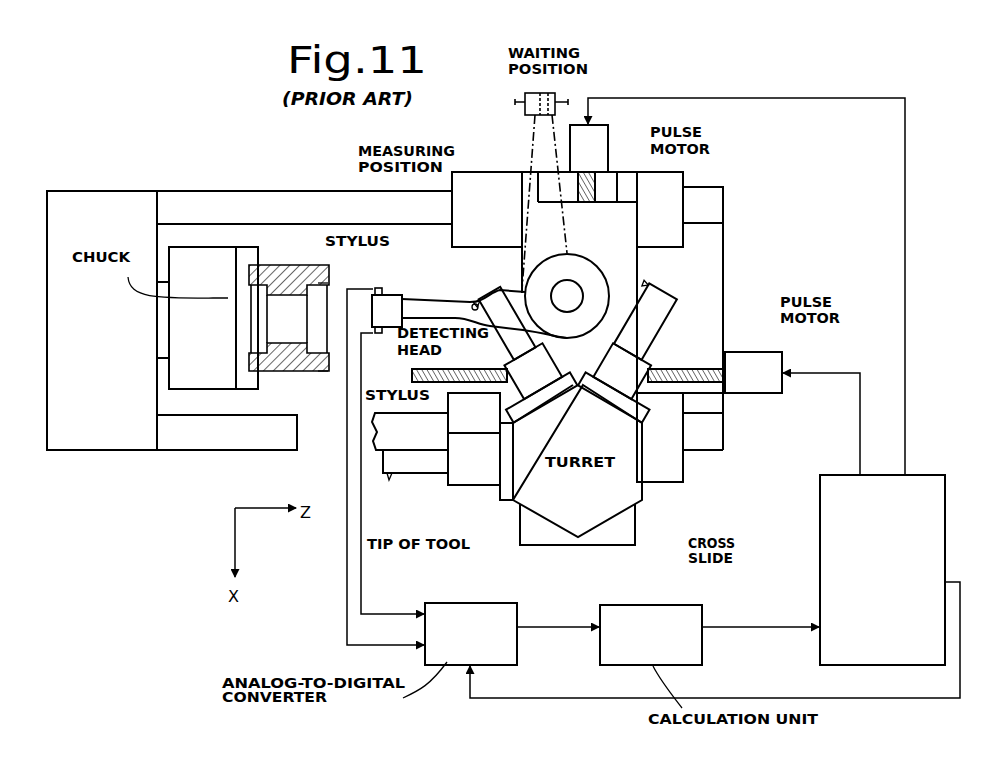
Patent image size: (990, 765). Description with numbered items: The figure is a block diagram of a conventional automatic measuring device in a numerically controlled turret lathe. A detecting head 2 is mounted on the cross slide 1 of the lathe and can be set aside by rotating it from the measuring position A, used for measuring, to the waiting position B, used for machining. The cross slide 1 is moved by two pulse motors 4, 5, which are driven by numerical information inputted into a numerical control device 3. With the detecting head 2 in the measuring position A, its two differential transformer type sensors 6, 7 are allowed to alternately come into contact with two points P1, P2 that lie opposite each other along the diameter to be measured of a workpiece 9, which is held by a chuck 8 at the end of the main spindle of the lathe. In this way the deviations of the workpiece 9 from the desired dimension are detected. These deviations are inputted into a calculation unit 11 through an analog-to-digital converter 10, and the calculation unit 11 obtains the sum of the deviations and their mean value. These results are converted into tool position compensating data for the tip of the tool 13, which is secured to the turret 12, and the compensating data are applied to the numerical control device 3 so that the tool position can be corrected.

The cross slide 1 is at (633, 525).
The detecting head 2 is at (397, 293).
The numerical control device 3 is at (890, 585).
The pulse motor 4 is at (600, 146).
The pulse motor 5 is at (765, 354).
The differential transformer type sensor 6 is at (375, 290).
The differential transformer type sensor 7 is at (375, 333).
The chuck 8 is at (198, 263).
The workpiece 9 is at (283, 267).
The analog-to-digital converter 10 is at (482, 645).
The calculation unit 11 is at (662, 645).
The turret 12 is at (543, 505).
The tip of the tool 13 is at (387, 478).
The measuring position A is at (403, 179).
The waiting position B is at (541, 181).
The measuring point P1 is at (318, 285).
The measuring point P2 is at (318, 373).